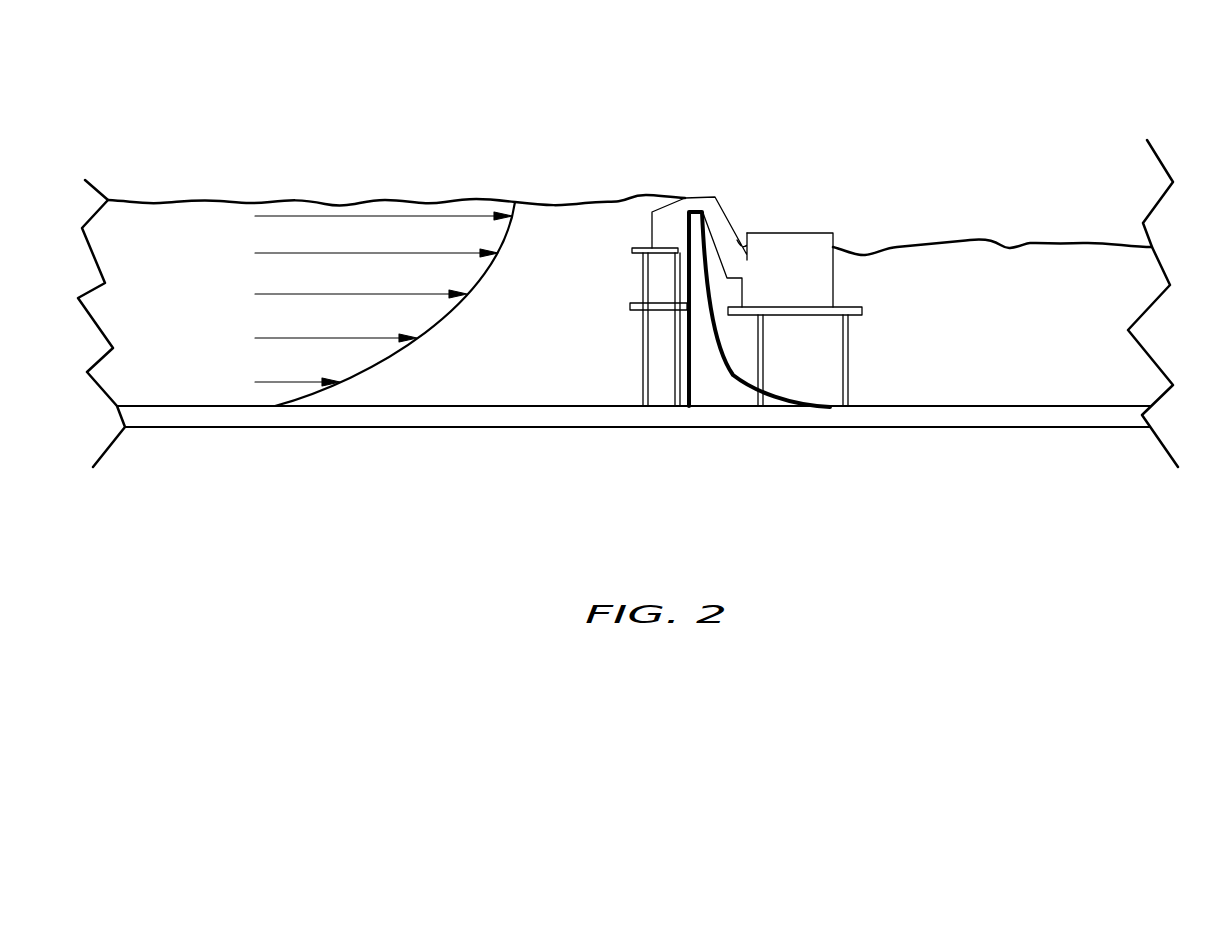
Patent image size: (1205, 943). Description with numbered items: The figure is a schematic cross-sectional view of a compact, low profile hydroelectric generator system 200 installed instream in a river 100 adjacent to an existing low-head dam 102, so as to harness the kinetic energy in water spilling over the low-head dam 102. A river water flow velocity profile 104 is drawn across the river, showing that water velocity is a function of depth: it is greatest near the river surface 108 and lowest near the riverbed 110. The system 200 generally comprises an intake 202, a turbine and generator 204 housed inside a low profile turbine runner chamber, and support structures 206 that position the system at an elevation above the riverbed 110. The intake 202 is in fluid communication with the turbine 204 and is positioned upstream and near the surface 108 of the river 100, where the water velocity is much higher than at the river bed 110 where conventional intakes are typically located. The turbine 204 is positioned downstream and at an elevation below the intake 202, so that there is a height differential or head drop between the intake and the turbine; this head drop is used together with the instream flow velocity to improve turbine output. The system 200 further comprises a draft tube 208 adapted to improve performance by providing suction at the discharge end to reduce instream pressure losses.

The river system 100 is at (187, 233).
The low-head dam 102 is at (718, 380).
The river water flow velocity profile 104 is at (495, 289).
The river surface 108 is at (467, 200).
The riverbed 110 is at (460, 405).
The hydroelectric generator system 200 is at (802, 158).
The intake 202 is at (673, 220).
The turbine and generator 204 is at (810, 247).
The support structures 206 is at (848, 352).
The draft tube 208 is at (835, 280).